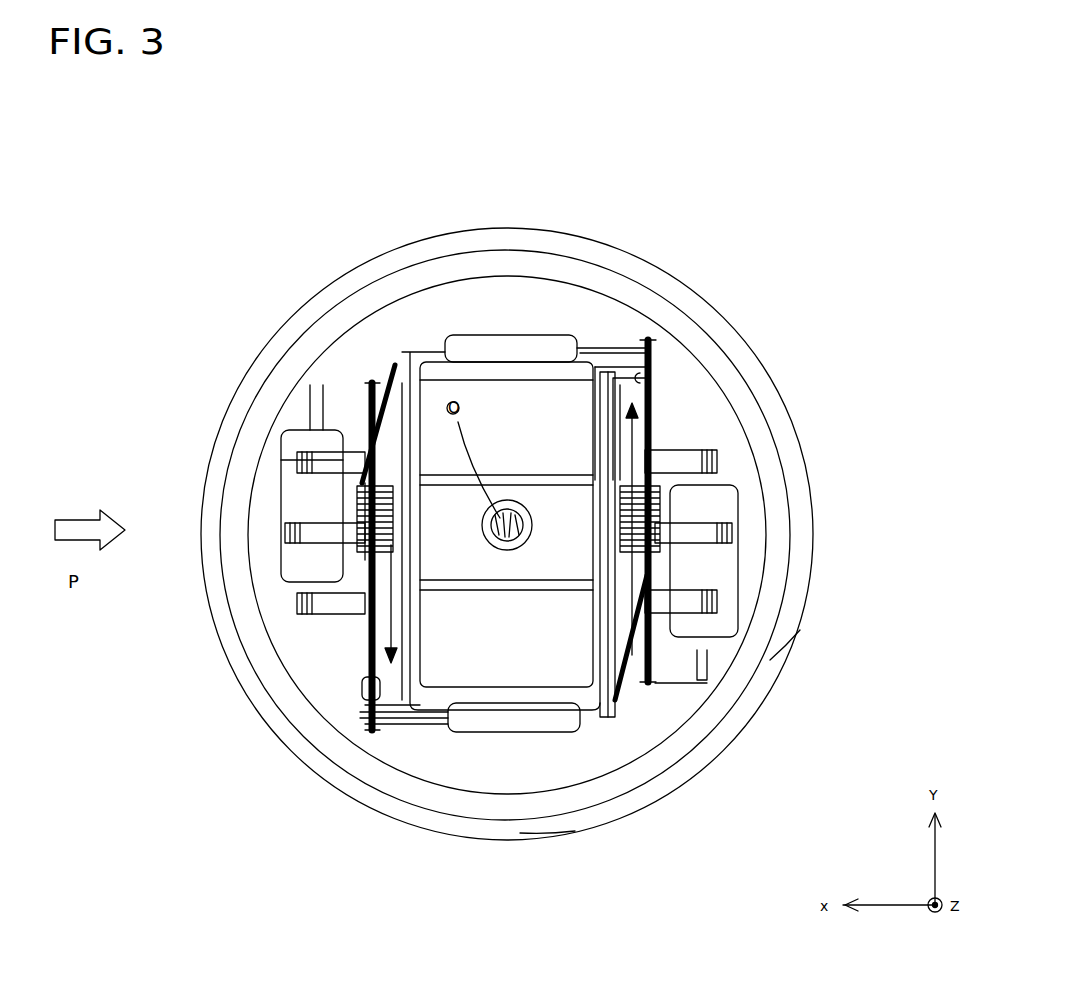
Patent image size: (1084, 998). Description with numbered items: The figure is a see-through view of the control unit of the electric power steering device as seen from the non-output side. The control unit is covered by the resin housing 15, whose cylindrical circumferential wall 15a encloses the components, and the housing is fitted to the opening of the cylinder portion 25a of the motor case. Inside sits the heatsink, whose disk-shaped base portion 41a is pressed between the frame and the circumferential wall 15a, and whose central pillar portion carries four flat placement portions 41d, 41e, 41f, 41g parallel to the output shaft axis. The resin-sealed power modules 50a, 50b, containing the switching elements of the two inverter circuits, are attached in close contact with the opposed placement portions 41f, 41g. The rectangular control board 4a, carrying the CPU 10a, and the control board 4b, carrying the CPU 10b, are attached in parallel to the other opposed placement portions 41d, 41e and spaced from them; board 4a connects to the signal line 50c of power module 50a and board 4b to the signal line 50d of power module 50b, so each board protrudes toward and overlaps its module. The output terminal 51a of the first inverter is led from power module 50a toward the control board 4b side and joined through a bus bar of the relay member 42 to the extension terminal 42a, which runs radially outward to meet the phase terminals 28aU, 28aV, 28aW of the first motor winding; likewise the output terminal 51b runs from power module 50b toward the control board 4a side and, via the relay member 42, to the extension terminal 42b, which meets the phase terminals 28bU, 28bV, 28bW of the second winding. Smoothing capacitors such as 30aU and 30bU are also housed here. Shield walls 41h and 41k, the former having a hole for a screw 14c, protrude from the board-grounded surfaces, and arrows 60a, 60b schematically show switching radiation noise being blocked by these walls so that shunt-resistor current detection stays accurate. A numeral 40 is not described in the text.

The housing 15 is at (603, 246).
The circumferential wall 15a is at (783, 648).
The screw 14c is at (330, 712).
The cylinder portion 25a is at (548, 838).
The extension terminal 42a is at (785, 670).
The control board 40 is at (455, 580).
The placement portion 41f is at (445, 705).
The power module 50b is at (490, 335).
The placement portion 41g is at (550, 352).
The signal line 50d is at (610, 340).
The power module 50a is at (540, 733).
The relay member 42 is at (655, 615).
The control board 4a is at (368, 658).
The arrow 60a is at (390, 377).
The output terminal 51b is at (392, 377).
The placement portion 41e is at (613, 435).
The CPU 10a is at (357, 510).
The smoothing capacitor 30bU is at (323, 433).
The phase terminal 28bU is at (297, 455).
The phase terminal 28bV is at (285, 534).
The phase terminal 28bW is at (297, 610).
The extension terminal 42b is at (310, 523).
The shield wall 41h is at (365, 720).
The placement portion 41d is at (400, 718).
The signal line 50c is at (417, 722).
The control board 4b is at (655, 378).
The arrow 60b is at (630, 710).
The output terminal 51a is at (614, 700).
The base portion 41a is at (623, 320).
The shield wall 41k is at (662, 350).
The CPU 10b is at (665, 525).
The smoothing capacitor 30aU is at (735, 580).
The phase terminal 28aW is at (717, 462).
The phase terminal 28aV is at (732, 533).
The phase terminal 28aU is at (717, 607).